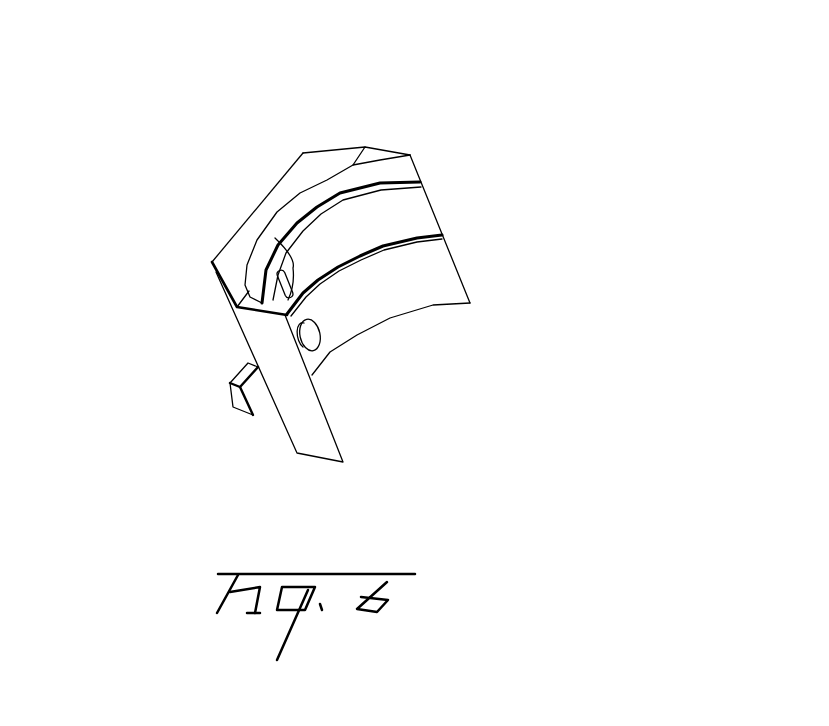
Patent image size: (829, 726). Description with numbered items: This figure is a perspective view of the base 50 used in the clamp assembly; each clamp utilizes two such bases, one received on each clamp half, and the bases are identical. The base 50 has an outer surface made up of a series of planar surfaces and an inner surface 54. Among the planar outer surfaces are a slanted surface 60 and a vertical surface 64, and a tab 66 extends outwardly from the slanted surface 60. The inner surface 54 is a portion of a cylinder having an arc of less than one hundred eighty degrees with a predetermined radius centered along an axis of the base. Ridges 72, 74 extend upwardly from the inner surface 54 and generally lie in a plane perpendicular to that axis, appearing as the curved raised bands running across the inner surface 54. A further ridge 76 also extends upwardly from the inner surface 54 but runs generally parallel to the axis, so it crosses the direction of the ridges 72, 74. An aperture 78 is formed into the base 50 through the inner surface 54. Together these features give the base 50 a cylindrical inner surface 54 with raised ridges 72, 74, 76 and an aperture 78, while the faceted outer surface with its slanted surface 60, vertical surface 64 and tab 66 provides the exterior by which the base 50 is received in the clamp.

The base 50 is at (468, 324).
The inner surface 54 is at (393, 305).
The slanted surface 60 is at (238, 302).
The vertical surface 64 is at (320, 447).
The tab 66 is at (255, 402).
The ridge 72 is at (338, 196).
The ridge 74 is at (380, 242).
The ridge 76 is at (283, 270).
The aperture 78 is at (315, 338).